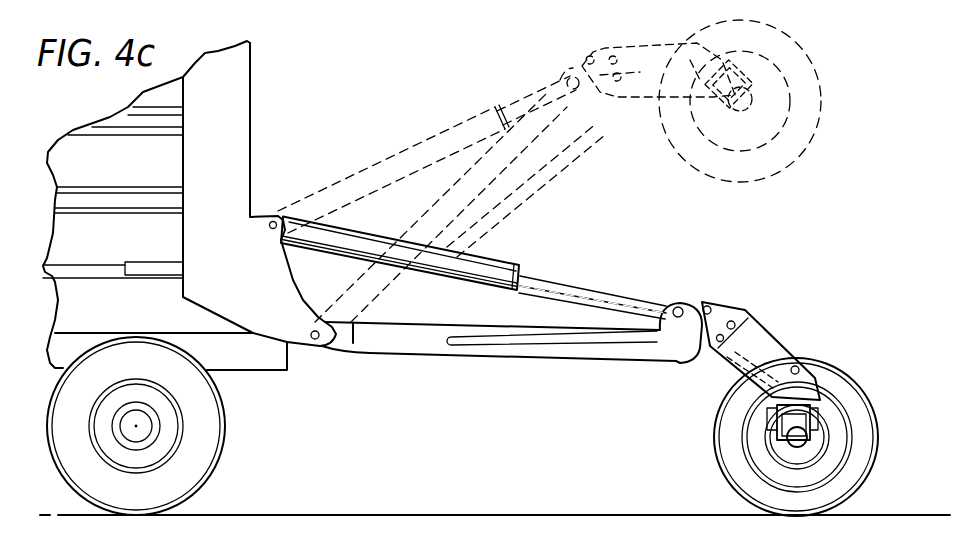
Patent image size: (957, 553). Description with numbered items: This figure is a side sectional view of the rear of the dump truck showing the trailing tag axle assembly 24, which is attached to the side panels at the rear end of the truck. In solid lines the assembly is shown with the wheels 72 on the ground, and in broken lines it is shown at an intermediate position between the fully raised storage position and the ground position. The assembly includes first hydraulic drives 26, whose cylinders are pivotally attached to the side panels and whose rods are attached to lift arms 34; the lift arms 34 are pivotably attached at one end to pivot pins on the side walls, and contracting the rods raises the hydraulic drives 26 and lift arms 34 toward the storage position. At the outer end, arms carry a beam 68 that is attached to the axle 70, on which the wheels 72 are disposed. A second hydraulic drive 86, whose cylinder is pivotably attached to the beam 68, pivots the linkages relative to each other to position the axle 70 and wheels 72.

The trailing tag axle assembly 24 is at (578, 266).
The first hydraulic drives 26 is at (405, 134).
The lift arms 34 is at (408, 343).
The beam 68 is at (773, 422).
The axle 70 is at (793, 442).
The wheels 72 is at (822, 375).
The second hydraulic drive 86 is at (762, 310).